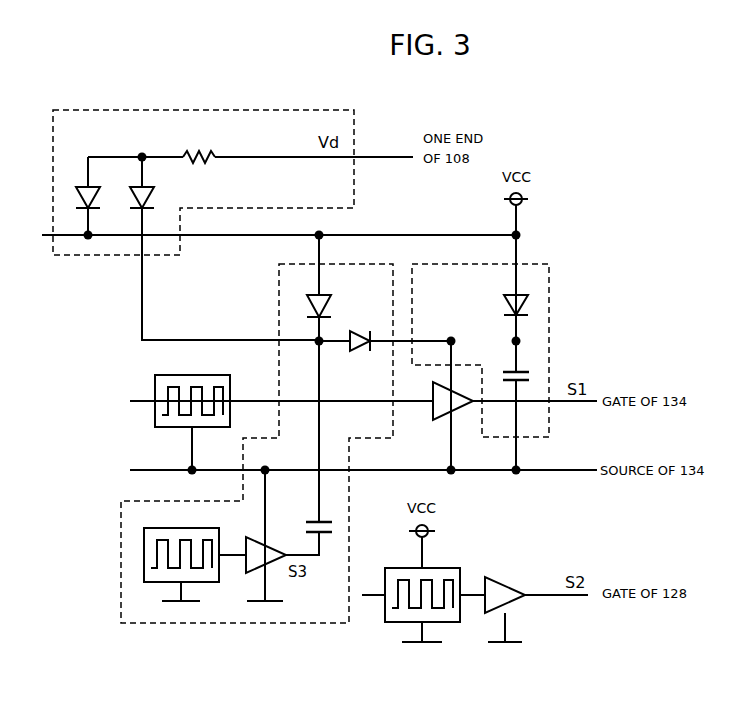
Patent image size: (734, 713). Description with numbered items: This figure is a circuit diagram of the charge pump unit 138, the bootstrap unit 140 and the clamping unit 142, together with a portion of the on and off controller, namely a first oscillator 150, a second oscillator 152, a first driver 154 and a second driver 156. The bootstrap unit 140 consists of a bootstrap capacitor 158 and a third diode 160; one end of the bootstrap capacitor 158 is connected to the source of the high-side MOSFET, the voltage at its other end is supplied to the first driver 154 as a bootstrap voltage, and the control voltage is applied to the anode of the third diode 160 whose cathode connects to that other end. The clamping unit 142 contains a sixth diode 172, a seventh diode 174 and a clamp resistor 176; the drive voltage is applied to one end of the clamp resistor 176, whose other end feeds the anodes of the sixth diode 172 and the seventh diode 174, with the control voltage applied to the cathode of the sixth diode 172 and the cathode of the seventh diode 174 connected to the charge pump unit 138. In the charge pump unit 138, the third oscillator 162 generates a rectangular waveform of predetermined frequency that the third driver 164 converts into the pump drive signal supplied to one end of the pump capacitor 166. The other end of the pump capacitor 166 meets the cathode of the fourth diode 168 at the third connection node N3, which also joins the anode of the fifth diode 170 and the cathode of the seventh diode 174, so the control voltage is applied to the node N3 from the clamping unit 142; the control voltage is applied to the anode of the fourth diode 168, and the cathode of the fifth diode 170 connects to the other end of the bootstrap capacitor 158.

The clamping unit 142 is at (297, 110).
The sixth diode 172 is at (78, 197).
The seventh diode 174 is at (130, 197).
The clamp resistor 176 is at (200, 150).
The bootstrap unit 140 is at (549, 270).
The third diode 160 is at (528, 303).
The bootstrap capacitor 158 is at (528, 372).
The first driver 154 is at (433, 412).
The first oscillator 150 is at (166, 375).
The fourth diode 168 is at (306, 303).
The fifth diode 170 is at (355, 333).
The third connection node N3 is at (319, 341).
The charge pump unit 138 is at (270, 623).
The third oscillator 162 is at (144, 575).
The third driver 164 is at (246, 568).
The pump capacitor 166 is at (328, 535).
The second oscillator 152 is at (385, 613).
The second driver 156 is at (485, 608).